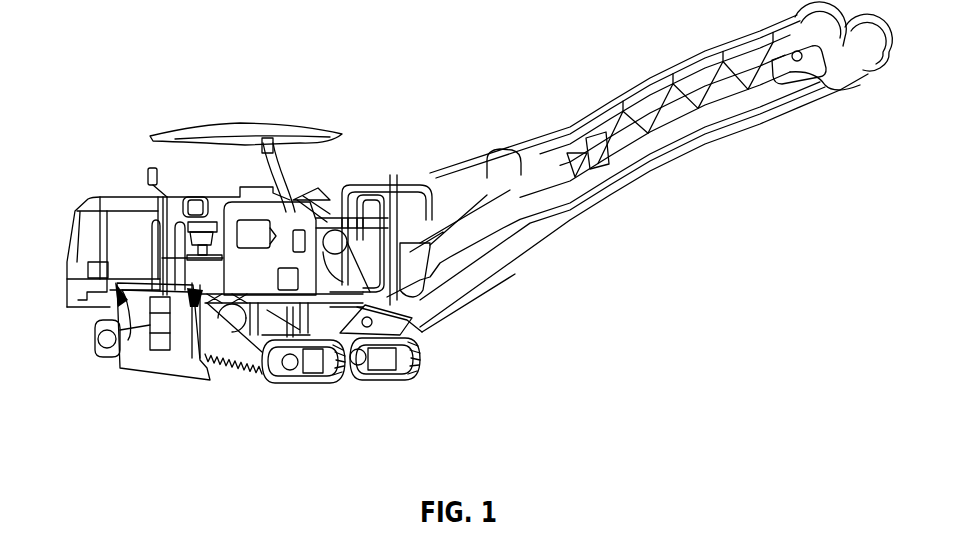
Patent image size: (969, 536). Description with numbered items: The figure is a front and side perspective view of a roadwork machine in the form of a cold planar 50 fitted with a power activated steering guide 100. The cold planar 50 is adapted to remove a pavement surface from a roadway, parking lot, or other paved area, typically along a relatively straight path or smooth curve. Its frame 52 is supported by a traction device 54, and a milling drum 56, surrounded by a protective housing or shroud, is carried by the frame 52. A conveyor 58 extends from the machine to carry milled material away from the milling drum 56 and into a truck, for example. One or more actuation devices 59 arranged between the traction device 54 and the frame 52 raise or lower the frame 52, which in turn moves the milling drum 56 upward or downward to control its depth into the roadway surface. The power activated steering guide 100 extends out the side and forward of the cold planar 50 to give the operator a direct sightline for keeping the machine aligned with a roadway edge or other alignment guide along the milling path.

The cold planar 50 is at (408, 83).
The frame 52 is at (237, 268).
The traction device 54 is at (333, 383).
The milling drum 56 is at (130, 378).
The conveyor 58 is at (628, 197).
The actuation devices 59 is at (392, 377).
The power activated steering guide 100 is at (290, 376).